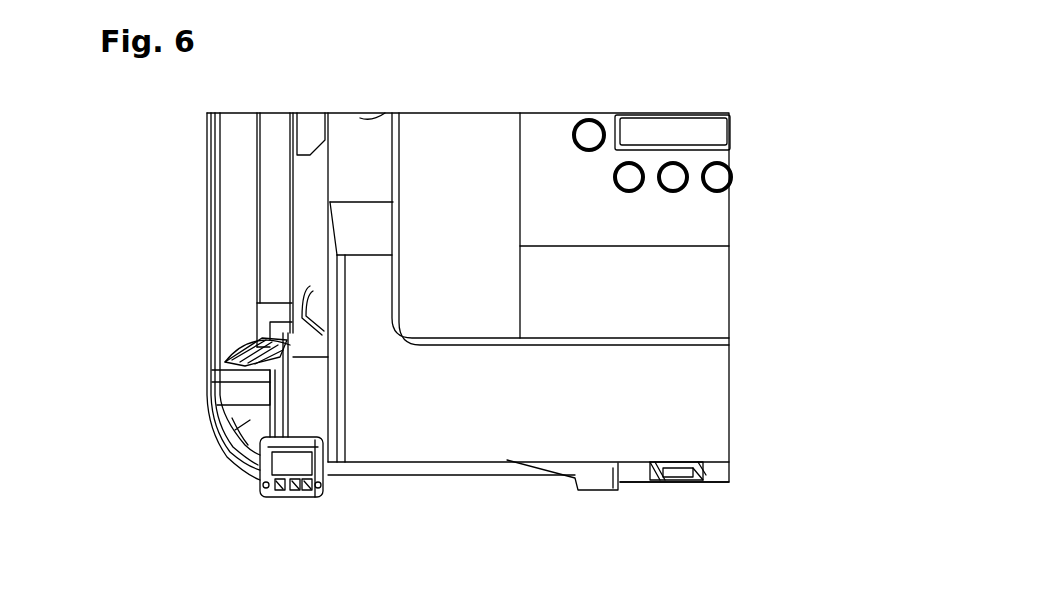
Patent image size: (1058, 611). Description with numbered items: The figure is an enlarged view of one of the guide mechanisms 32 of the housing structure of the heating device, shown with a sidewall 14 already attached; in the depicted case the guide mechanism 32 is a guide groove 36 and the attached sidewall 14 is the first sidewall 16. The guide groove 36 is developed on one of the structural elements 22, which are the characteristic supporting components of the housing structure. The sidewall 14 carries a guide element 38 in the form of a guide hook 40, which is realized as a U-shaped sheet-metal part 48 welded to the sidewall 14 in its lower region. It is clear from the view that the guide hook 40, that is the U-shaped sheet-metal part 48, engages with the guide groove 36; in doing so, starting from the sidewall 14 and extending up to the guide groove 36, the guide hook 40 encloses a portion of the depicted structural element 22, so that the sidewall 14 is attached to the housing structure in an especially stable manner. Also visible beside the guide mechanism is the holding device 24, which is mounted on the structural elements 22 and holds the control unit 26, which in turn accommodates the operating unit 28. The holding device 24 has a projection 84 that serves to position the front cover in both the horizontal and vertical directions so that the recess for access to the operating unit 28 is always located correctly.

The sidewall 14 is at (422, 297).
The first sidewall 16 is at (236, 233).
The structural element 22 is at (248, 420).
The holding device 24 is at (412, 430).
The control unit 26 is at (463, 302).
The operating unit 28 is at (577, 208).
The guide mechanism 32 is at (222, 361).
The guide groove 36 is at (262, 358).
The guide element 38 is at (187, 334).
The guide hook 40 is at (187, 334).
The U-shaped sheet-metal part 48 is at (258, 340).
The projection 84 is at (593, 470).